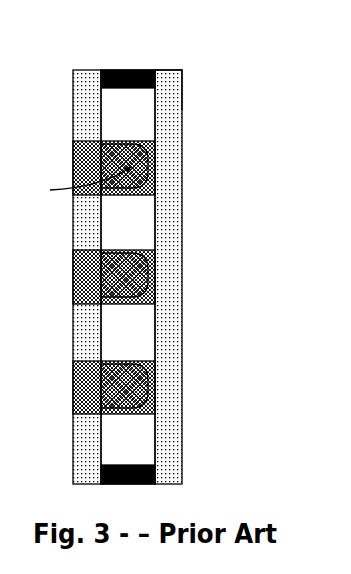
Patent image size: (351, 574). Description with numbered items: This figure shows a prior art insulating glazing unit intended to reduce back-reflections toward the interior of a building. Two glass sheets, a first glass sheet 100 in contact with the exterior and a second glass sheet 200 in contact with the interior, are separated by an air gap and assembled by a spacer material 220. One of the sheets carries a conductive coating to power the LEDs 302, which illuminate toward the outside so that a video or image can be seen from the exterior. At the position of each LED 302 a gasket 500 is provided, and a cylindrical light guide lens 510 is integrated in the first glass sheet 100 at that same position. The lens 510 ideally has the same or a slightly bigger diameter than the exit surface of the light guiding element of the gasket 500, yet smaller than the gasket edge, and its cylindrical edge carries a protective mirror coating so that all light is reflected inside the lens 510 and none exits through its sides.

The first glass sheet 100 is at (158, 242).
The second glass sheet 200 is at (172, 68).
The spacer material 220 is at (130, 93).
The LED 302 is at (157, 163).
The gasket 500 is at (123, 248).
The cylindrical light guide lens 510 is at (87, 306).